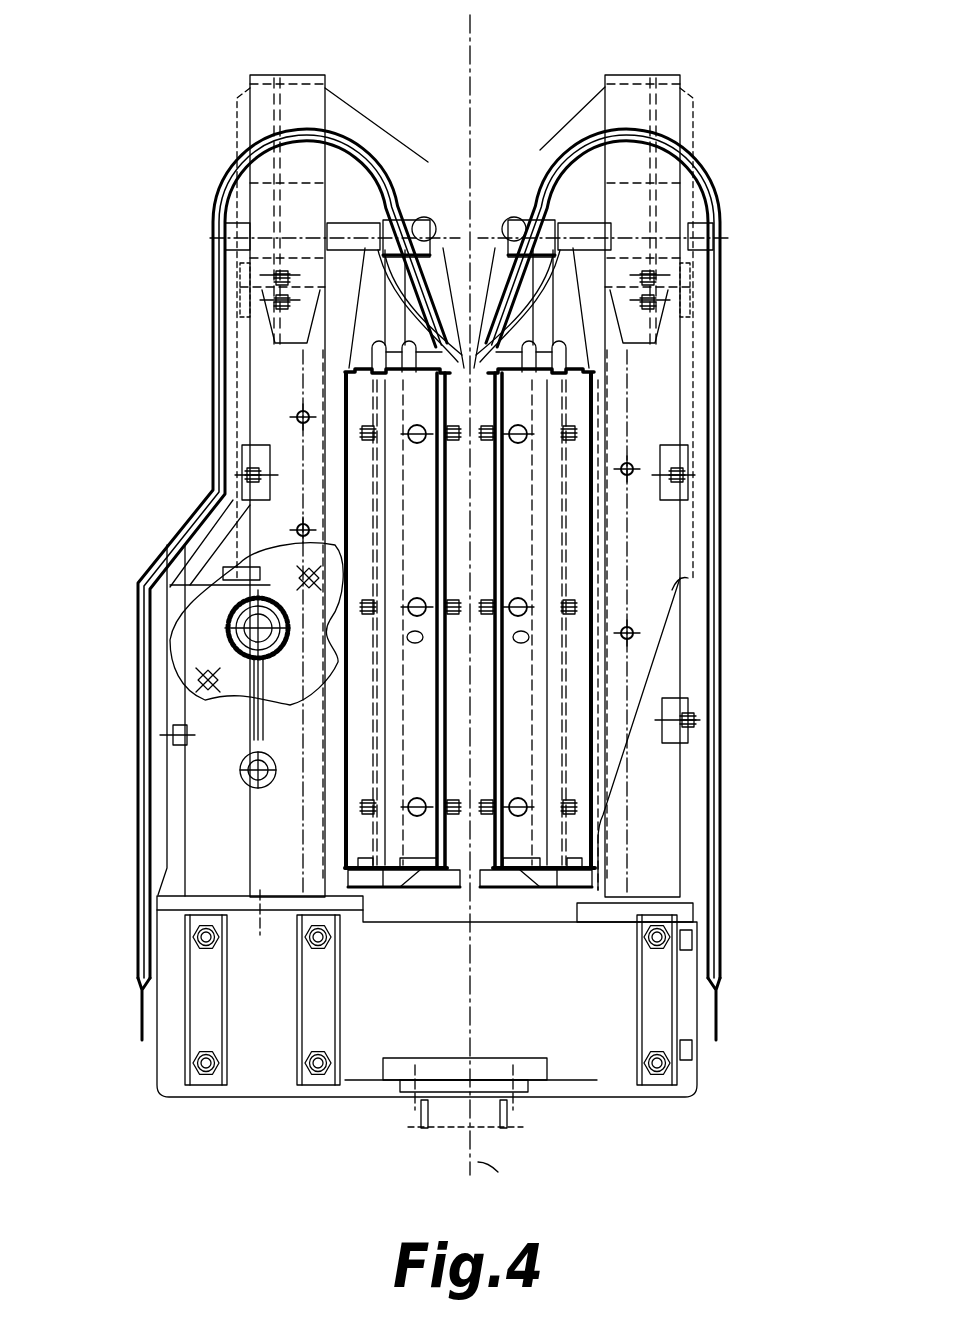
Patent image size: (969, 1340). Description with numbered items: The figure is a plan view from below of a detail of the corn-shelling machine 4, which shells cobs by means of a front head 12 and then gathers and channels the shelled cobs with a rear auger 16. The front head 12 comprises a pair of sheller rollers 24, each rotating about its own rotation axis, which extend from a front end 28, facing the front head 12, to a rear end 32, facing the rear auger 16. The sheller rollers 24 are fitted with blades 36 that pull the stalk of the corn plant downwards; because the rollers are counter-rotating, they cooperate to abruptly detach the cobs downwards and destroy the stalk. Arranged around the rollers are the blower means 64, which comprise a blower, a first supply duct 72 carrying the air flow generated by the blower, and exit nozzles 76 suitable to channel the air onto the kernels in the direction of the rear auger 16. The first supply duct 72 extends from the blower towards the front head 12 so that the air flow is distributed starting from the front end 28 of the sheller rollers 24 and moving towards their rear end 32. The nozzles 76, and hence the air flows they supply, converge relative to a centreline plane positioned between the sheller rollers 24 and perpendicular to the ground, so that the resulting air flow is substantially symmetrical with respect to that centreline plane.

The corn-shelling machine 4 is at (728, 98).
The front head 12 is at (195, 244).
The rear auger 16 is at (152, 1130).
The sheller roller 24 is at (552, 473).
The front end 28 is at (592, 283).
The rear end 32 is at (577, 850).
The blades 36 is at (393, 762).
The blower means 64 is at (388, 549).
The first supply duct 72 is at (133, 618).
The exit nozzle 76 is at (410, 218).